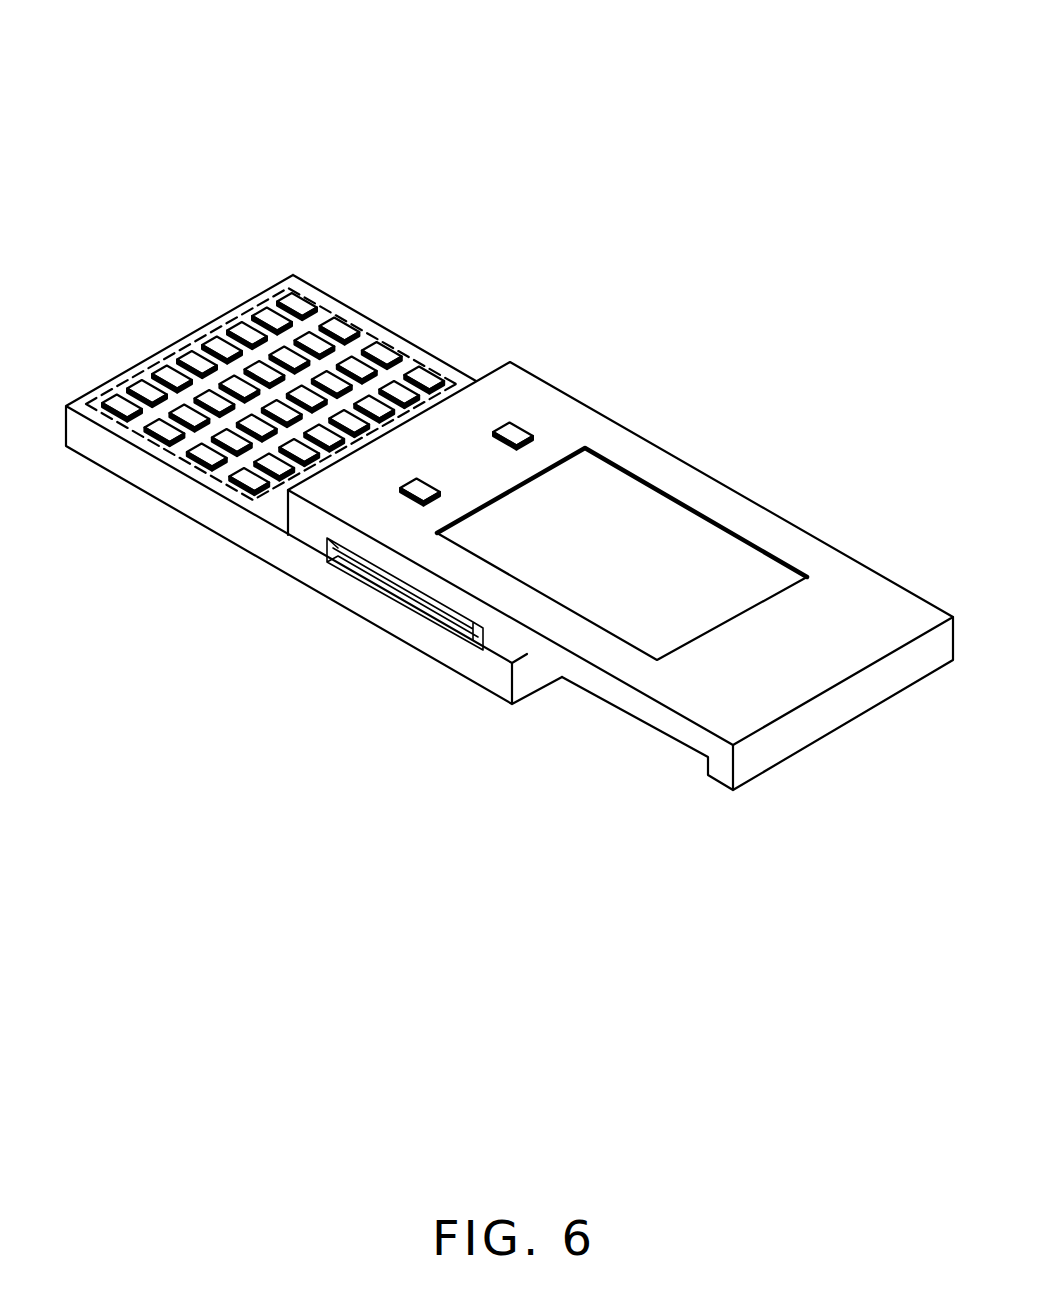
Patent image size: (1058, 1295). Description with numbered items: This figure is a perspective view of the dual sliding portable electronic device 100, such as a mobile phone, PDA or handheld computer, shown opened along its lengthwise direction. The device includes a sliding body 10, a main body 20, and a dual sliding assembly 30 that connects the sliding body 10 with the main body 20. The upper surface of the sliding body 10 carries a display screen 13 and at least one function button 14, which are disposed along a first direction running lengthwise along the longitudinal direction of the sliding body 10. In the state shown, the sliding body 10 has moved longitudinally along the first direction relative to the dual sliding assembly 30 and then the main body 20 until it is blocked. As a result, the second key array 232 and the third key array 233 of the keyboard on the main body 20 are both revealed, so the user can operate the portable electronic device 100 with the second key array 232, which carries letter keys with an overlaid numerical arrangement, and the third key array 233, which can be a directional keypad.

The dual sliding portable electronic device 100 is at (490, 30).
The sliding body 10 is at (850, 587).
The display screen 13 is at (658, 530).
The function button 14 is at (513, 432).
The main body 20 is at (495, 680).
The second key array 232 is at (245, 313).
The third key array 233 is at (146, 375).
The dual sliding assembly 30 is at (385, 577).